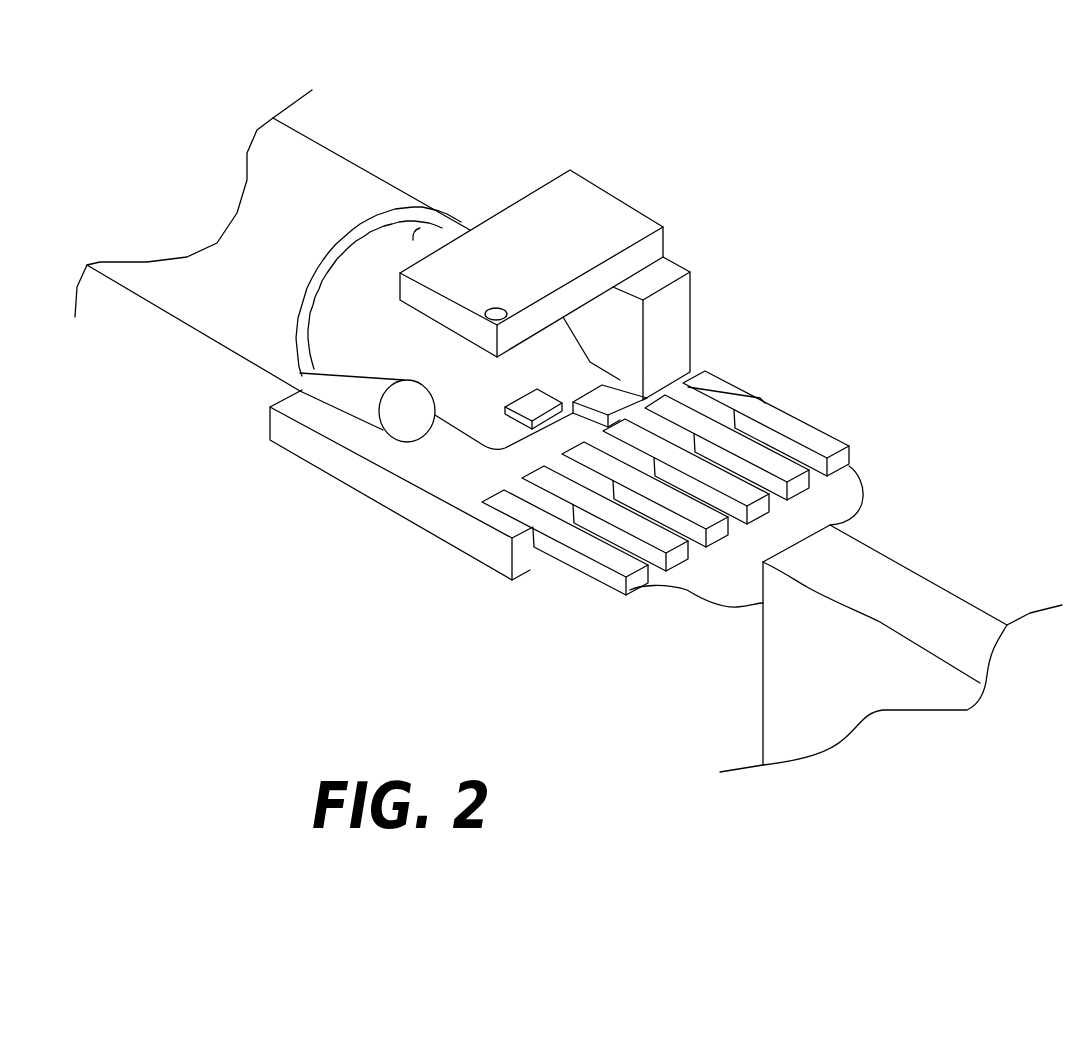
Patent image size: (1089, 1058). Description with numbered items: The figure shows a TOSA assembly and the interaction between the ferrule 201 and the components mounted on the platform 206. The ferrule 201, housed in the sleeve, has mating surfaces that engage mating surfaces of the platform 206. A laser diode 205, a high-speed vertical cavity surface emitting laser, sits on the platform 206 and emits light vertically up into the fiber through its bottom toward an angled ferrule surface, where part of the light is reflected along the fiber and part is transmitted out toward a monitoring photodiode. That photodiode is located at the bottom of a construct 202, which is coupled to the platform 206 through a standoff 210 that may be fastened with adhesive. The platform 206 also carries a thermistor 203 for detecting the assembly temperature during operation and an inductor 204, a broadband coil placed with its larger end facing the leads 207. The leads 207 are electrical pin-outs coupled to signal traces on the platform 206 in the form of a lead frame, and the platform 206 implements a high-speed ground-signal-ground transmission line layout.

The ferrule 201 is at (461, 222).
The construct 202 is at (557, 240).
The thermistor 203 is at (615, 400).
The inductor 204 is at (358, 399).
The laser diode 205 is at (523, 407).
The platform 206 is at (498, 530).
The leads 207 is at (820, 578).
The standoff 210 is at (678, 284).